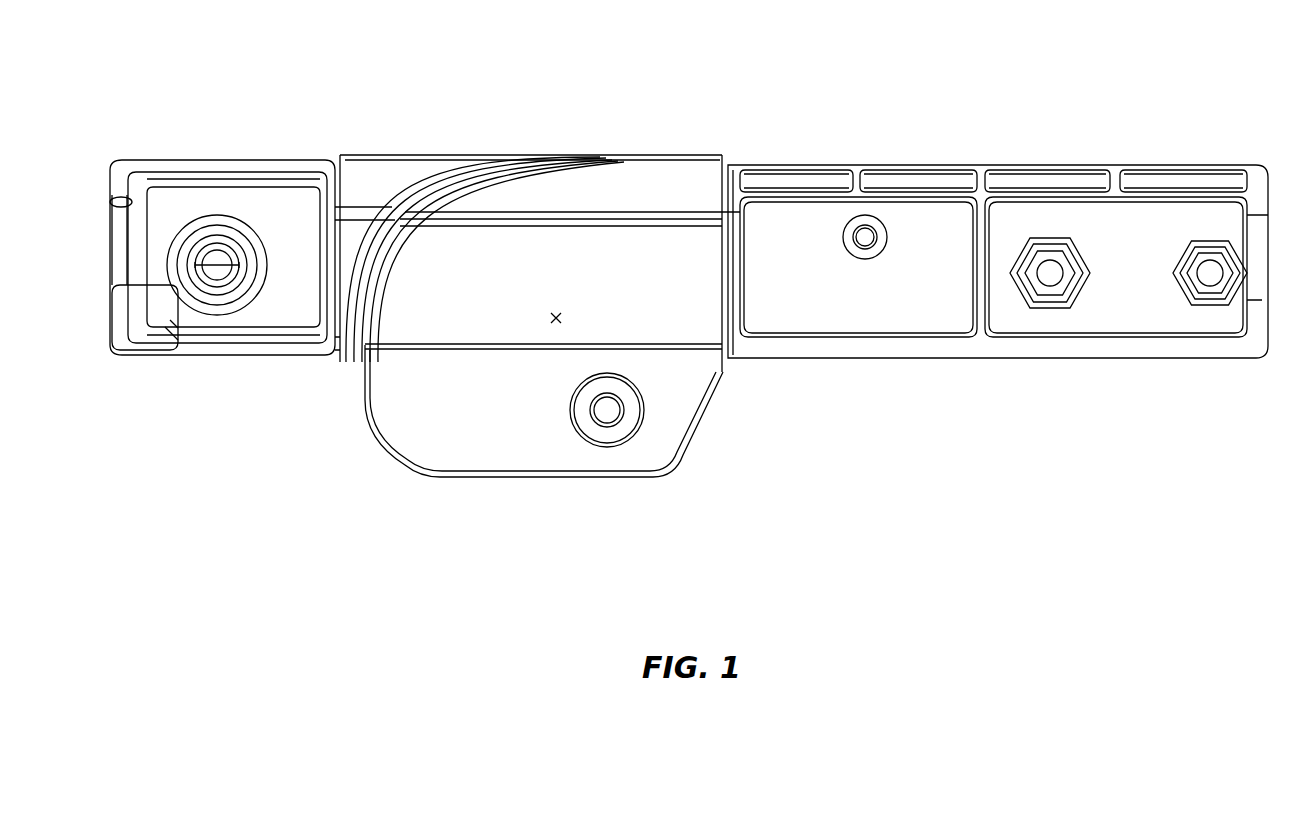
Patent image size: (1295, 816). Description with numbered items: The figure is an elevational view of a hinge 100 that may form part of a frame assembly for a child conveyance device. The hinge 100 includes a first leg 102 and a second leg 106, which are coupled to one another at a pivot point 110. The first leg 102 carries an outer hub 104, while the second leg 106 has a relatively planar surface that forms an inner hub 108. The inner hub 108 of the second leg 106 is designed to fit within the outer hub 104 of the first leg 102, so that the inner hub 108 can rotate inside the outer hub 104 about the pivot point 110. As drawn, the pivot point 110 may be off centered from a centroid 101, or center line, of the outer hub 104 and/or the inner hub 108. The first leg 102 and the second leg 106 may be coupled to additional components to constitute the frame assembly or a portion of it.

The hinge 100 is at (866, 107).
The centroid 101 is at (553, 319).
The first leg 102 is at (856, 366).
The outer hub 104 is at (507, 457).
The second leg 106 is at (229, 371).
The inner hub 108 is at (608, 157).
The pivot point 110 is at (633, 420).